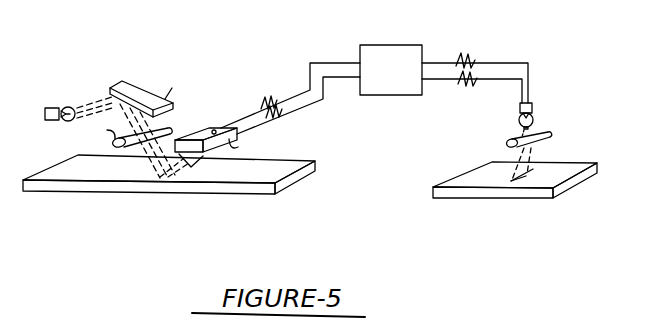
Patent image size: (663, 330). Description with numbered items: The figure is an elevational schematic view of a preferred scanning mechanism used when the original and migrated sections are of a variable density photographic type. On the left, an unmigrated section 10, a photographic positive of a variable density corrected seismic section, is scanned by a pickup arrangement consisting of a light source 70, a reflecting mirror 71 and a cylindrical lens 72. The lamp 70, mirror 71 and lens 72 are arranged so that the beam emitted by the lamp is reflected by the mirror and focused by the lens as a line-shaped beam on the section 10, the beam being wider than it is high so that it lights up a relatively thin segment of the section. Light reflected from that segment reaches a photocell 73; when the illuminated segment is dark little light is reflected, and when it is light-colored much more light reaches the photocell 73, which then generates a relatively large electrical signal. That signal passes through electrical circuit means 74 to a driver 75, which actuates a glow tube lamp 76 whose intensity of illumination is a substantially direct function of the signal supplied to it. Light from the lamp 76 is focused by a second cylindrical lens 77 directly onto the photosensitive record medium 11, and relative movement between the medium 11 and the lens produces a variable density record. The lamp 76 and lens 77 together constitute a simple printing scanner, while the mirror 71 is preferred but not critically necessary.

The unmigrated section 10 is at (152, 195).
The record medium 11 is at (484, 200).
The light source 70 is at (67, 106).
The reflecting mirror 71 is at (124, 80).
The cylindrical lens 72 is at (172, 124).
The photocell 73 is at (272, 152).
The electrical circuit means 74 is at (345, 63).
The driver 75 is at (444, 66).
The glow tube lamp 76 is at (534, 112).
The cylindrical lens 77 is at (550, 138).